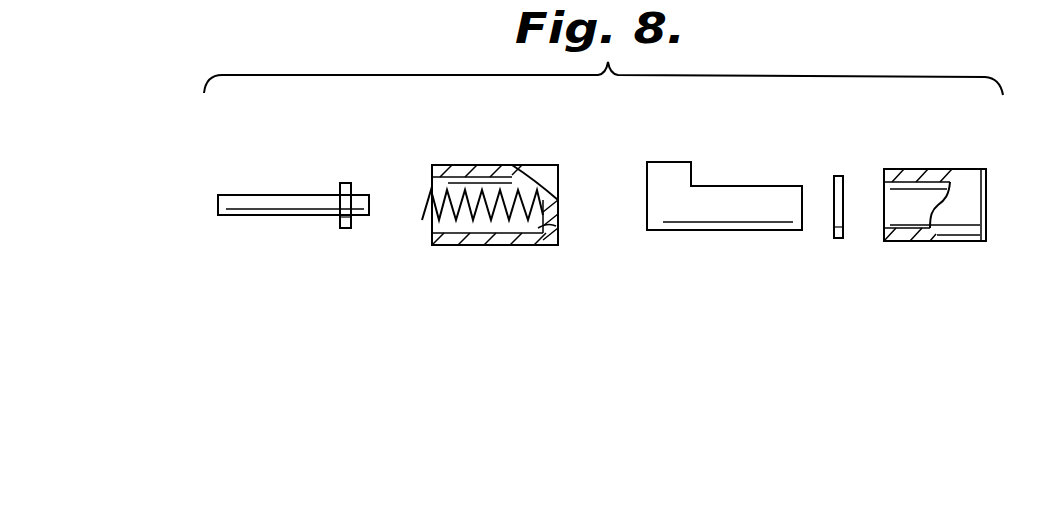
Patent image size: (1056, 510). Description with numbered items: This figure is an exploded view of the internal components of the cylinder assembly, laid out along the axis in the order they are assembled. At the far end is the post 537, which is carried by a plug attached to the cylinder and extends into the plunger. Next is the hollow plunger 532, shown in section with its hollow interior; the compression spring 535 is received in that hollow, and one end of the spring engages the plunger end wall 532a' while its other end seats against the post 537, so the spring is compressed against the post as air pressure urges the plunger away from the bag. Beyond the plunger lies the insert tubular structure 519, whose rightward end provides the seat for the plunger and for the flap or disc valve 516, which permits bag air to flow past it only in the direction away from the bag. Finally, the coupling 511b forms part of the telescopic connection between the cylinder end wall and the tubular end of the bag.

The post 537 is at (243, 195).
The hollow plunger 532 is at (509, 196).
The compression spring 535 is at (448, 218).
The plunger end wall 532a' is at (566, 258).
The insert tubular structure 519 is at (728, 193).
The flap or disc valve 516 is at (836, 225).
The coupling 511b is at (925, 170).